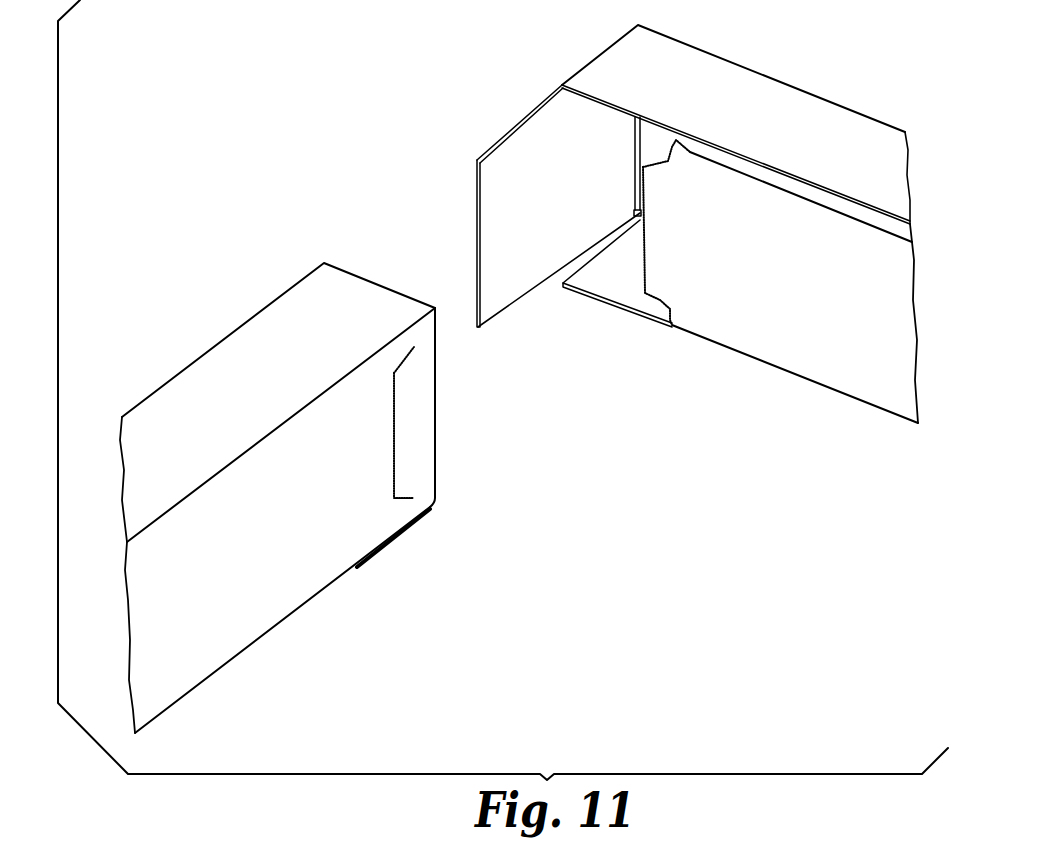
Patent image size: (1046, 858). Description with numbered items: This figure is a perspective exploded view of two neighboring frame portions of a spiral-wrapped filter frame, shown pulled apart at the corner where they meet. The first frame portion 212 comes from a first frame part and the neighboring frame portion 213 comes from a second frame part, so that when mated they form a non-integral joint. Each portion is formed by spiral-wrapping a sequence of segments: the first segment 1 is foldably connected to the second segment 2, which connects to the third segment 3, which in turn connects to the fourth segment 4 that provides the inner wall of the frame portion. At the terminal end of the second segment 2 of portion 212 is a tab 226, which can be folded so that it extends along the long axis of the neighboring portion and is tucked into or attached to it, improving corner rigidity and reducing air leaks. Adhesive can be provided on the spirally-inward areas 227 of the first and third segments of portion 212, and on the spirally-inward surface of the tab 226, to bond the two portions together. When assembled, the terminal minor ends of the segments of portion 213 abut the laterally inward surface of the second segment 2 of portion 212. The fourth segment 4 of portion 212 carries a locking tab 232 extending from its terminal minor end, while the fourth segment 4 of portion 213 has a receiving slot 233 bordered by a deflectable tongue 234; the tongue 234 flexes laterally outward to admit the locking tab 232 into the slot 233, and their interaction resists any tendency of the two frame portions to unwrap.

The first segment 1 is at (638, 298).
The second segment 2 is at (662, 141).
The third segment 3 is at (242, 345).
The fourth segment 4 is at (282, 600).
The first frame portion 212 is at (833, 373).
The neighboring frame portion 213 is at (177, 670).
The tab 226 is at (492, 190).
The spirally-inward area 227 is at (623, 78).
The locking tab 232 is at (660, 242).
The receiving slot 233 is at (393, 455).
The tongue 234 is at (405, 417).